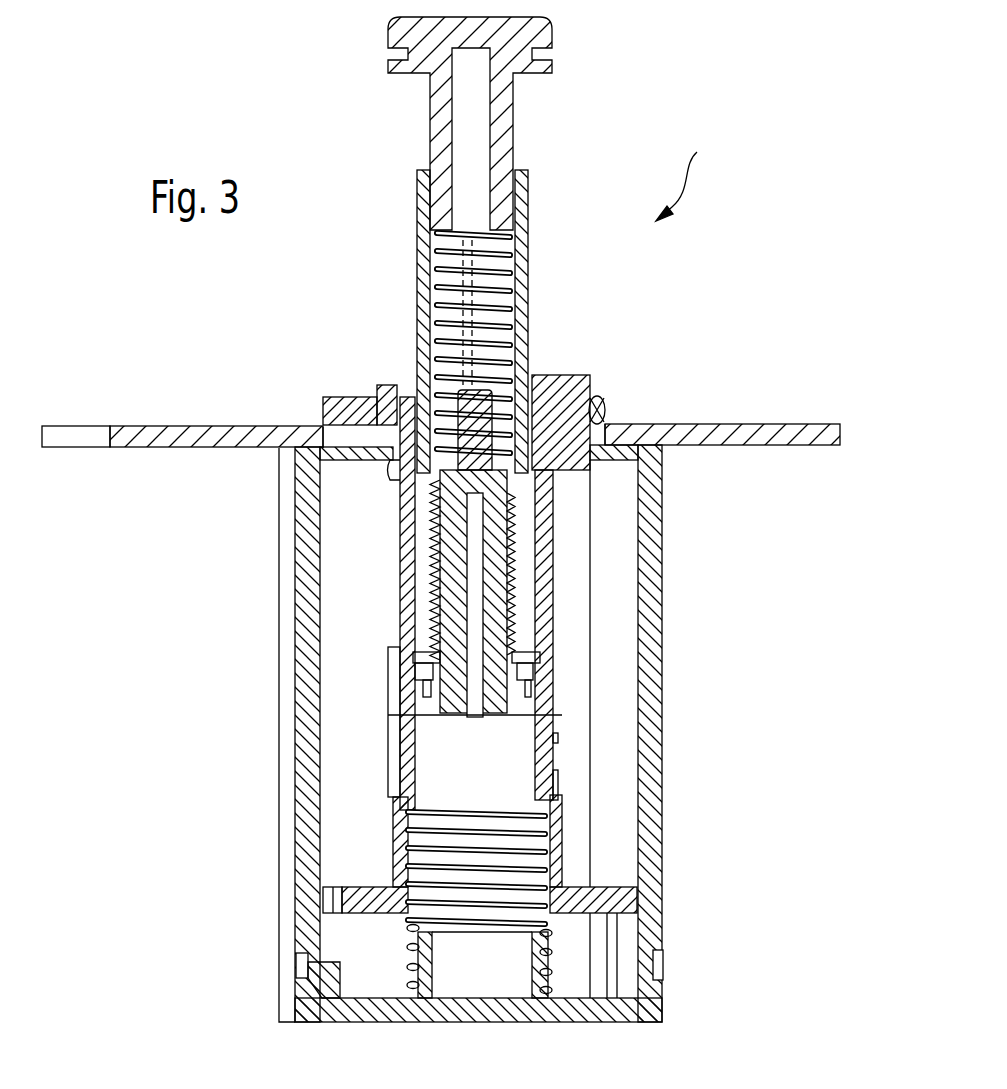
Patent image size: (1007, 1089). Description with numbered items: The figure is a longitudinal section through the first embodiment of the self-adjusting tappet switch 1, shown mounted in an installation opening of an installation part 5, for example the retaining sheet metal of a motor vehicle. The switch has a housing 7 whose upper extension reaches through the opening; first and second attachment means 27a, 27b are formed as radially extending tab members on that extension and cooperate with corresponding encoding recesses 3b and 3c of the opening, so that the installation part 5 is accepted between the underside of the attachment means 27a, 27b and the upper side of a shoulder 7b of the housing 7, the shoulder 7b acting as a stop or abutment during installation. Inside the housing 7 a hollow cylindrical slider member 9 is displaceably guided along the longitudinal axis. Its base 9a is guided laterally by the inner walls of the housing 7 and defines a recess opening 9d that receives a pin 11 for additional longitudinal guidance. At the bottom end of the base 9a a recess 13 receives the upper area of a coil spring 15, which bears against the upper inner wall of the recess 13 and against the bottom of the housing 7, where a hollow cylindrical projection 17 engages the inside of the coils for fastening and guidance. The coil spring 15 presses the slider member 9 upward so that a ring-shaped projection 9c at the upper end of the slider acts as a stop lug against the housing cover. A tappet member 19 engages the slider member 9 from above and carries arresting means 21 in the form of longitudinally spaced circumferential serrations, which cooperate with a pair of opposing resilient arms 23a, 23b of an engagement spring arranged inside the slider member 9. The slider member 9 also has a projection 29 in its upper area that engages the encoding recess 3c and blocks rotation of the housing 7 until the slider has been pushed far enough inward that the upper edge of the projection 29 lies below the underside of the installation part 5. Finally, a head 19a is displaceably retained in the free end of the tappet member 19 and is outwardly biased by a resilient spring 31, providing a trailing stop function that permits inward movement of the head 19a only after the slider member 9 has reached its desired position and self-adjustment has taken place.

The self-adjusting tappet switch 1 is at (690, 176).
The encoding recess 3b is at (335, 419).
The encoding recess 3c is at (608, 423).
The installation part 5 is at (826, 424).
The housing 7 is at (662, 565).
The shoulder 7b is at (340, 460).
The slider member 9 is at (555, 525).
The base 9a is at (378, 885).
The projection 9c is at (392, 475).
The recess opening 9d is at (630, 885).
The pin 11 is at (612, 960).
The recess 13 is at (545, 833).
The coil spring 15 is at (412, 966).
The hollow cylindrical projection 17 is at (532, 961).
The tappet member 19 is at (530, 290).
The head 19a is at (548, 37).
The arresting means 21 is at (432, 565).
The resilient arm 23a is at (398, 650).
The resilient arm 23b is at (560, 652).
The attachment means 27a is at (356, 397).
The attachment means 27b is at (607, 397).
The projection 29 is at (562, 375).
The resilient spring 31 is at (520, 232).